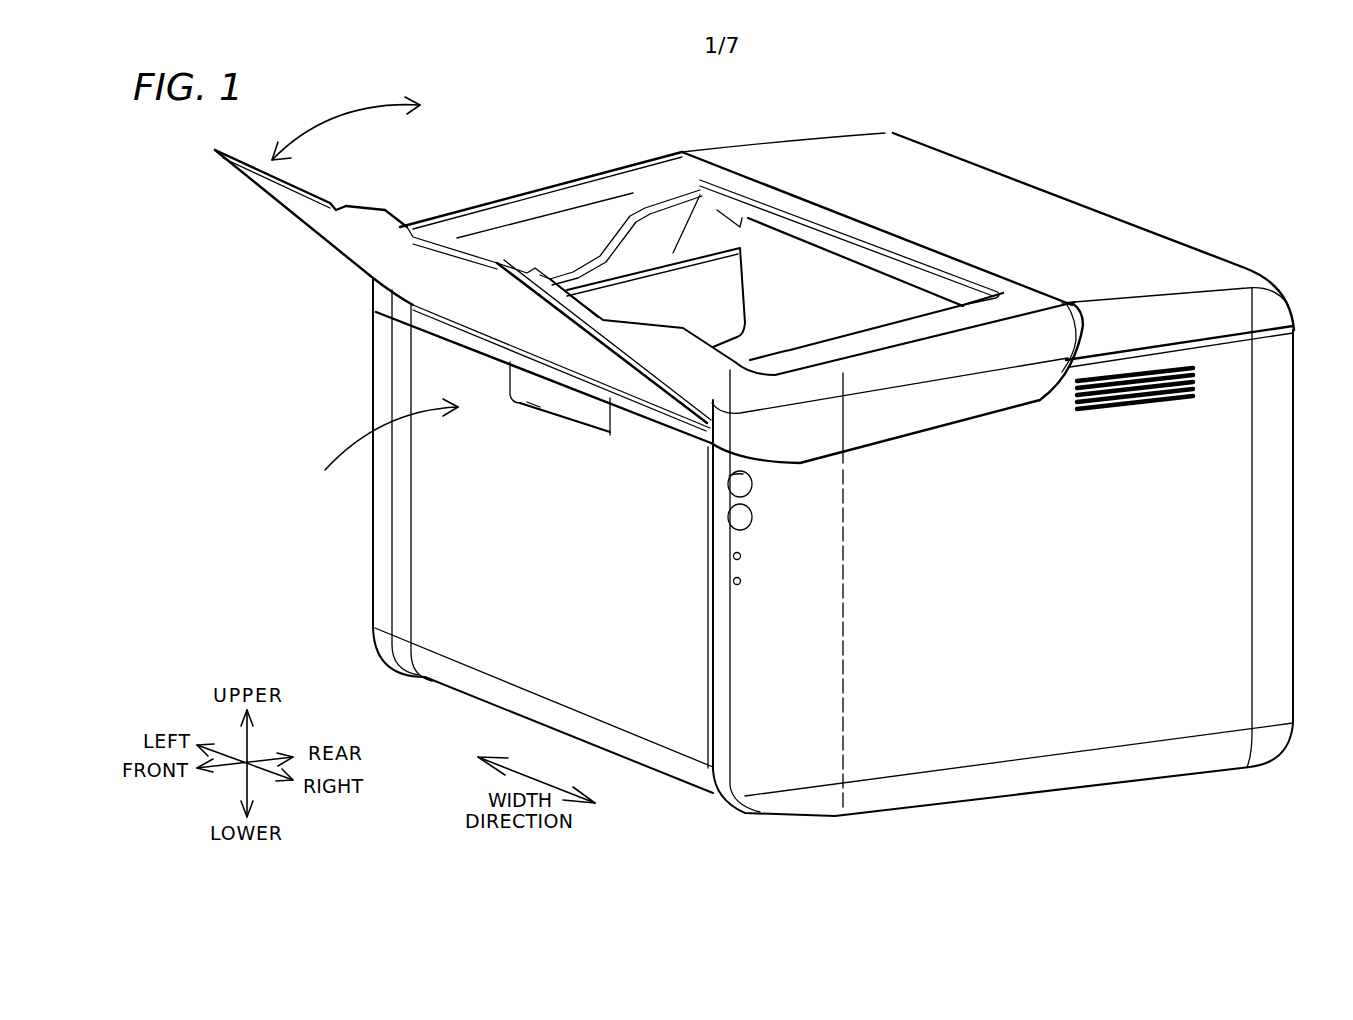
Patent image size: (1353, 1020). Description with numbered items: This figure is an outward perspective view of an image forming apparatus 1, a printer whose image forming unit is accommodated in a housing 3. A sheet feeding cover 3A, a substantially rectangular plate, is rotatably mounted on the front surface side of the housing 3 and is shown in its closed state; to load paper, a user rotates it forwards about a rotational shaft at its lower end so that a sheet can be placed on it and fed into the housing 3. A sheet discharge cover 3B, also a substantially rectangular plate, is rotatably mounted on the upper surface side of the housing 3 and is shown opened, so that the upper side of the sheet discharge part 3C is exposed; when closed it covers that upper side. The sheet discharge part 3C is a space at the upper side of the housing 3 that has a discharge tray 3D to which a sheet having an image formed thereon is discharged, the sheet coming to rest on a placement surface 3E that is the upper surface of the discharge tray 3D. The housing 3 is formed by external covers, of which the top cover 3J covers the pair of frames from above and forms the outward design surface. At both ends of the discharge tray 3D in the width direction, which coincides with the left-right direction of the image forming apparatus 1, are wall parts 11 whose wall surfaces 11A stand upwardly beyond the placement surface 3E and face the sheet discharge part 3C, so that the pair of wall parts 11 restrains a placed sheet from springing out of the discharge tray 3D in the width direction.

The image forming apparatus 1 is at (754, 442).
The housing 3 is at (818, 133).
The sheet feeding cover 3A is at (433, 540).
The sheet discharge cover 3B is at (318, 215).
The sheet discharge part 3C is at (660, 242).
The discharge tray 3D is at (743, 353).
The placement surface 3E is at (670, 211).
The top cover 3J is at (612, 178).
The wall part 11 is at (530, 208).
The wall surface 11A is at (500, 248).